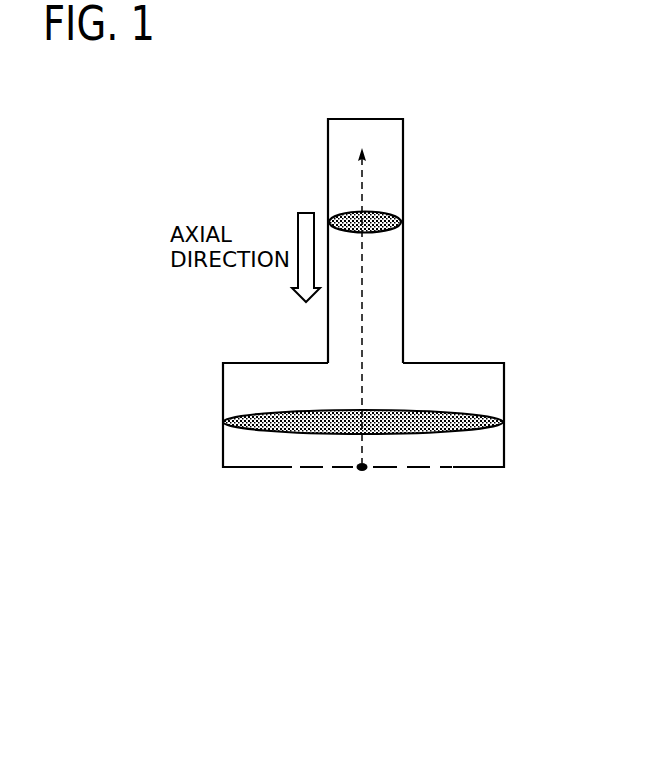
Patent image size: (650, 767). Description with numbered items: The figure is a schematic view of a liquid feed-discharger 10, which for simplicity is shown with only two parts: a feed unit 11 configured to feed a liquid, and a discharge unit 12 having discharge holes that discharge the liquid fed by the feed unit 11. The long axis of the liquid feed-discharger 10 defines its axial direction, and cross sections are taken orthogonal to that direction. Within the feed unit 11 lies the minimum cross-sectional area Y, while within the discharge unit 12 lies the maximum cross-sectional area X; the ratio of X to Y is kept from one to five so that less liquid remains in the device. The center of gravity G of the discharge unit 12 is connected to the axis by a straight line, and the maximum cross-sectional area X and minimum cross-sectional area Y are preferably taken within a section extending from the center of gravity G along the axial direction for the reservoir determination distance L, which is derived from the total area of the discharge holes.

The liquid feed-discharger 10 is at (327, 93).
The feed unit 11 is at (408, 148).
The discharge unit 12 is at (325, 477).
The reservoir determination distance L is at (363, 320).
The maximum cross-sectional area X is at (319, 411).
The minimum cross-sectional area Y is at (372, 234).
The center of gravity of the discharge unit G is at (362, 477).